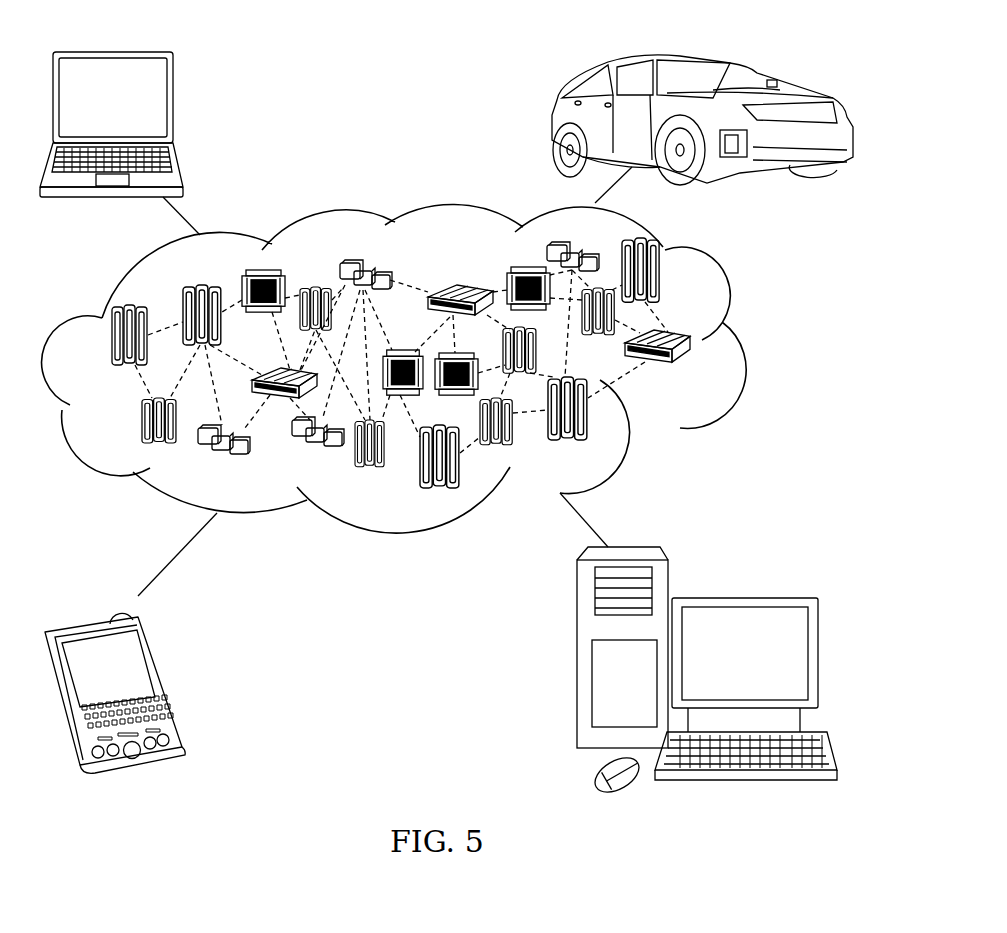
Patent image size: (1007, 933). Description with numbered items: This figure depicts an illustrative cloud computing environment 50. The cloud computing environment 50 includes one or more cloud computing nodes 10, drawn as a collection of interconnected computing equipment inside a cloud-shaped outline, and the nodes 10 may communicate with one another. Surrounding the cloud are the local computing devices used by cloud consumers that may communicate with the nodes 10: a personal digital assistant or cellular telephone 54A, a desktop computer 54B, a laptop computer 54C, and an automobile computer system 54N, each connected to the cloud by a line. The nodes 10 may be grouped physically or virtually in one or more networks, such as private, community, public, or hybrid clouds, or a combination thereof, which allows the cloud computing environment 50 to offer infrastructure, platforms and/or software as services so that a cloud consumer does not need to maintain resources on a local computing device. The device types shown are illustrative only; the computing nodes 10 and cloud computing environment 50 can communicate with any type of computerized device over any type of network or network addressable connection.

The cloud computing node 10 is at (447, 363).
The cloud computing environment 50 is at (742, 345).
The personal digital assistant or cellular telephone 54A is at (163, 680).
The desktop computer 54B is at (743, 597).
The laptop computer 54C is at (173, 107).
The automobile computer system 54N is at (552, 118).